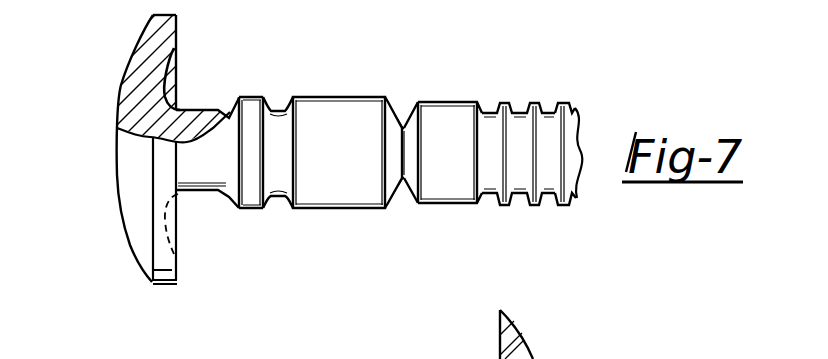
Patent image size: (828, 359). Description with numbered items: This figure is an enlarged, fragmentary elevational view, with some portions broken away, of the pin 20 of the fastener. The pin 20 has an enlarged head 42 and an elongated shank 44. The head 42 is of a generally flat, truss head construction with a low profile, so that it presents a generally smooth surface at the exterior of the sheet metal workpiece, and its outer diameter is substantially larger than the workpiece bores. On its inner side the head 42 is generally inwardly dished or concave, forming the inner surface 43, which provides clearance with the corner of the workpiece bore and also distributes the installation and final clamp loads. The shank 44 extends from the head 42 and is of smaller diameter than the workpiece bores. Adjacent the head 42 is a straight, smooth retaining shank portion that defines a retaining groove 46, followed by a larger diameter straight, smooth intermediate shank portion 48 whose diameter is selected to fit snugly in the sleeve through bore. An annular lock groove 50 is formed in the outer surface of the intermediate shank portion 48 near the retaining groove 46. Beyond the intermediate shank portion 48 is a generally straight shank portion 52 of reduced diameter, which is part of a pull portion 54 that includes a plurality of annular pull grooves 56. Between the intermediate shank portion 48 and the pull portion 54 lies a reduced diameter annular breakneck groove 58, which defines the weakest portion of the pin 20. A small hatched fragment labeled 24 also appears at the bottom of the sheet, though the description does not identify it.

The pin 20 is at (418, 81).
The clip 24 is at (548, 357).
The head 42 is at (118, 91).
The inner surface 43 is at (180, 83).
The shank 44 is at (618, 293).
The retaining groove 46 is at (203, 193).
The intermediate shank portion 48 is at (377, 237).
The lock groove 50 is at (273, 100).
The straight shank portion 52 is at (455, 101).
The pull portion 54 is at (622, 237).
The pull grooves 56 is at (543, 108).
The breakneck groove 58 is at (411, 199).